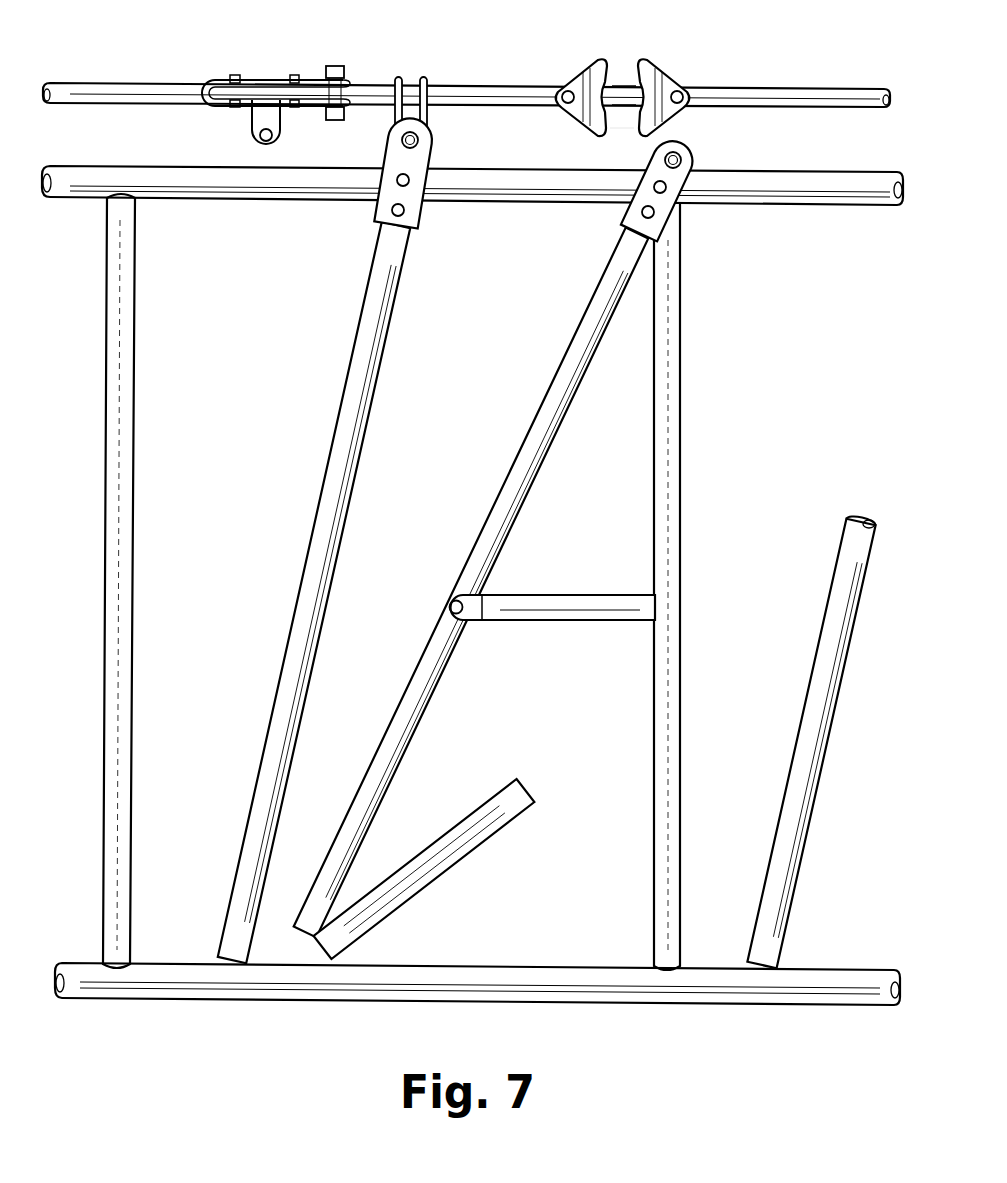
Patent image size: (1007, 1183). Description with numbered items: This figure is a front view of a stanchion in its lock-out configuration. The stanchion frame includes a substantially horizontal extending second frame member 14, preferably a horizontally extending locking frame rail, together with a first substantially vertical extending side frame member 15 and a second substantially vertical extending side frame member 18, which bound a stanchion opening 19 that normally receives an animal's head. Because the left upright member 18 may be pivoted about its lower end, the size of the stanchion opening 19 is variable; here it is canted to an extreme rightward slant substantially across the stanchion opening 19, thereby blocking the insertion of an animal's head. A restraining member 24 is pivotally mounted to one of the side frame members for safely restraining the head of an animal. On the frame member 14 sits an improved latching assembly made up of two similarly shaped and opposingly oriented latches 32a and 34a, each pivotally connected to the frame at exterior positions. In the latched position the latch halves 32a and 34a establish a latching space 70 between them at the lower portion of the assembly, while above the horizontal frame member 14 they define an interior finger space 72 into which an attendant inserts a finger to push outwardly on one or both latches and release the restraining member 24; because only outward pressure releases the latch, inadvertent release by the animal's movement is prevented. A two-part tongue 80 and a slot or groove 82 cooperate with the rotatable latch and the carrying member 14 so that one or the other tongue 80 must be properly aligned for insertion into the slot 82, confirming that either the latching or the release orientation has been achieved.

The second frame member 14 is at (803, 93).
The first substantially vertical extending side frame member 15 is at (680, 425).
The second substantially vertical extending side frame member 18 is at (340, 385).
The stanchion opening 19 is at (455, 437).
The restraining member 24 is at (533, 485).
The latch 32a is at (592, 58).
The latch 34a is at (665, 58).
The latching space 70 is at (622, 125).
The interior finger space 72 is at (620, 70).
The two-part tongue 80 is at (263, 112).
The slot or groove 82 is at (222, 80).